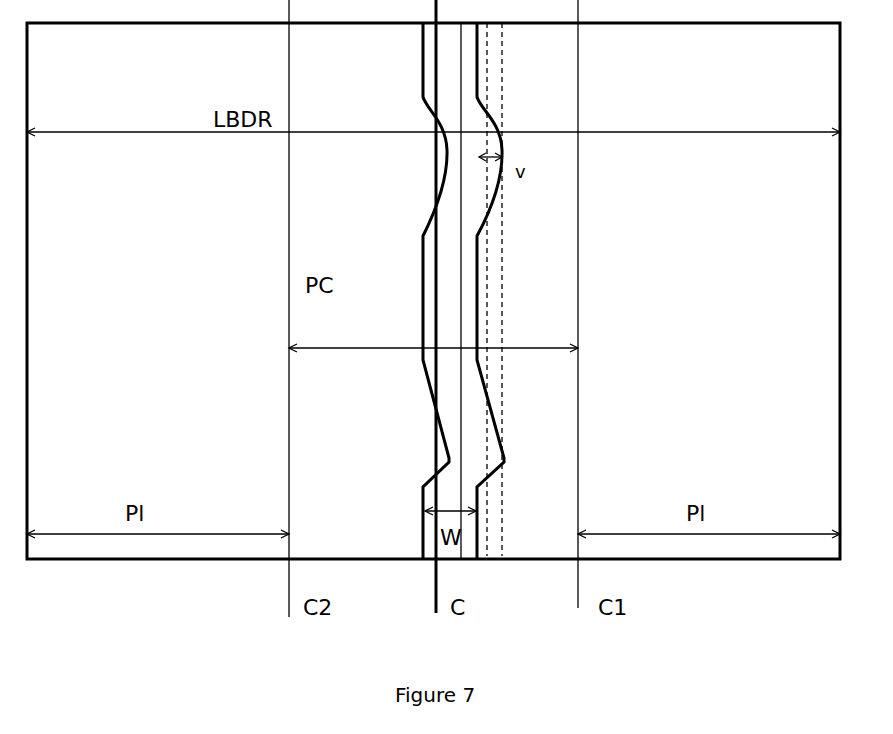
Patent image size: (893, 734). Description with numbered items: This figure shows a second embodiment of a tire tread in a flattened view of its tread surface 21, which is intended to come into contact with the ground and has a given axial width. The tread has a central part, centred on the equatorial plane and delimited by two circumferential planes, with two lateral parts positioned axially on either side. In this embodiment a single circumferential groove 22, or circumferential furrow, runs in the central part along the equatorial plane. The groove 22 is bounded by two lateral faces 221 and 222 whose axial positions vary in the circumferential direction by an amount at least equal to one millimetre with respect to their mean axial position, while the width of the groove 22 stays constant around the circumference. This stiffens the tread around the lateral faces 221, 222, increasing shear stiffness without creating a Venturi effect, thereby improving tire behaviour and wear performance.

The tread surface 21 is at (433, 291).
The circumferential groove 22 is at (471, 291).
The lateral face 221 is at (500, 189).
The lateral face 222 is at (419, 364).